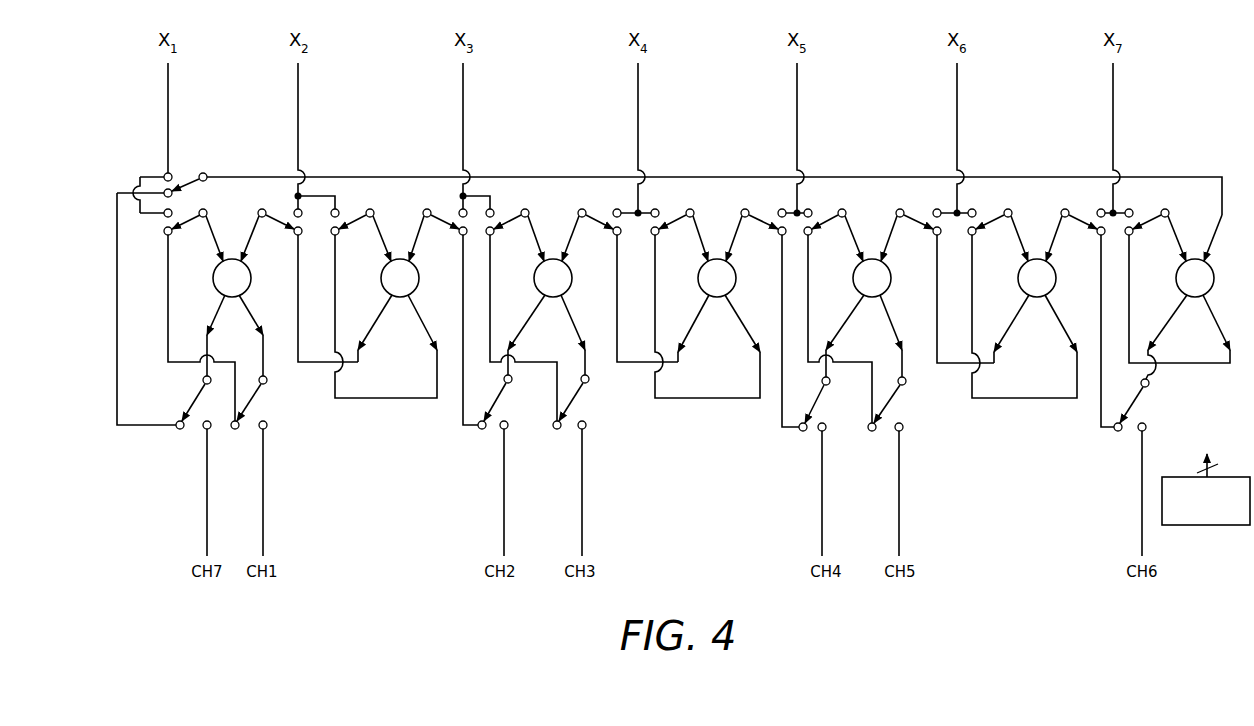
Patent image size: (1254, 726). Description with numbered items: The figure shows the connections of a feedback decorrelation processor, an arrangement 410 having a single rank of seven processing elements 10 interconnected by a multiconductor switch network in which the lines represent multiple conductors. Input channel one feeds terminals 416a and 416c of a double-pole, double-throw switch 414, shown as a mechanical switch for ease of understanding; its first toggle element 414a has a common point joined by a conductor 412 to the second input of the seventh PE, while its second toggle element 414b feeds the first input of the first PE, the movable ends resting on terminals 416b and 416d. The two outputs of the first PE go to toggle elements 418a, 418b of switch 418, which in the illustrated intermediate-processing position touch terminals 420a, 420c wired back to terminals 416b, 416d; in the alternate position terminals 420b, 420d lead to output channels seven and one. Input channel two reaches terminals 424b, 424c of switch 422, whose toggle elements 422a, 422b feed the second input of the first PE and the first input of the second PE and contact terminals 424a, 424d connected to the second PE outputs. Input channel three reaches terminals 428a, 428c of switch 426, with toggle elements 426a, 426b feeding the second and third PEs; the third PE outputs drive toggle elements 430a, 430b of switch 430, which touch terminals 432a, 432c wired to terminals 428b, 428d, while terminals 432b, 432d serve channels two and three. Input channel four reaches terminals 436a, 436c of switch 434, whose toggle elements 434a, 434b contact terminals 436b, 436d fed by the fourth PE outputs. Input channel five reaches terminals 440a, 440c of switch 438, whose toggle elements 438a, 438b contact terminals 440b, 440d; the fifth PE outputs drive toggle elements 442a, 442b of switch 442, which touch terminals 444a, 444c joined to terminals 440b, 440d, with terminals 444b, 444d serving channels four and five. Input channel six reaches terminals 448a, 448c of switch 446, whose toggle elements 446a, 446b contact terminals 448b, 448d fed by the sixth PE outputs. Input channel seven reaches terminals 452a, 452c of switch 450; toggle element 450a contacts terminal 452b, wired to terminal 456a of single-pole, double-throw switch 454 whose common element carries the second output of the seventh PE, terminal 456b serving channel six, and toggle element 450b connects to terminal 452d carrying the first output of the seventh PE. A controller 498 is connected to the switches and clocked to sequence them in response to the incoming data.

The processing element 10 is at (1176, 278).
The arrangement 410 is at (686, 532).
The conductor 412 is at (377, 175).
The double-pole, double-throw switch 414 is at (121, 162).
The first toggle element 414a is at (199, 174).
The second toggle element 414b is at (197, 218).
The terminal 416a is at (169, 172).
The terminal 416b is at (178, 193).
The terminal 416c is at (165, 217).
The terminal 416d is at (167, 236).
The double-pole, double-throw switch 418 is at (200, 413).
The toggle element 418a is at (198, 388).
The toggle element 418b is at (259, 392).
The terminal 420a is at (178, 431).
The terminal 420b is at (205, 432).
The terminal 420c is at (236, 432).
The terminal 420d is at (266, 432).
The double-pole, double-throw switch 422 is at (305, 230).
The toggle element 422a is at (268, 209).
The toggle element 422b is at (362, 212).
The terminal 424a is at (296, 236).
The terminal 424b is at (296, 208).
The terminal 424c is at (336, 208).
The terminal 424d is at (337, 236).
The double-pole, double-throw switch 426 is at (465, 230).
The toggle element 426a is at (424, 208).
The toggle element 426b is at (523, 208).
The terminal 428a is at (458, 209).
The terminal 428b is at (462, 236).
The terminal 428c is at (488, 208).
The terminal 428d is at (492, 236).
The double-pole, double-throw switch 430 is at (518, 413).
The toggle element 430a is at (500, 388).
The toggle element 430b is at (577, 389).
The terminal 432a is at (482, 431).
The terminal 432b is at (503, 431).
The terminal 432c is at (555, 431).
The terminal 432d is at (583, 431).
The double-pole, double-throw switch 434 is at (625, 230).
The toggle element 434a is at (583, 208).
The toggle element 434b is at (689, 208).
The terminal 436a is at (614, 208).
The terminal 436b is at (615, 236).
The terminal 436c is at (657, 208).
The terminal 436d is at (657, 236).
The double-pole, double-throw switch 438 is at (787, 230).
The toggle element 438a is at (748, 208).
The toggle element 438b is at (842, 208).
The terminal 440a is at (782, 208).
The terminal 440b is at (781, 236).
The terminal 440c is at (809, 208).
The terminal 440d is at (809, 236).
The double-pole, double-throw switch 442 is at (831, 413).
The toggle element 442a is at (815, 392).
The toggle element 442b is at (890, 393).
The terminal 444a is at (801, 433).
The terminal 444b is at (821, 433).
The terminal 444c is at (872, 433).
The terminal 444d is at (901, 433).
The double-pole, double-throw switch 446 is at (940, 230).
The toggle element 446a is at (900, 208).
The toggle element 446b is at (1008, 208).
The terminal 448a is at (937, 208).
The terminal 448b is at (936, 236).
The terminal 448c is at (973, 208).
The terminal 448d is at (973, 236).
The double-pole, double-throw switch 450 is at (1105, 230).
The toggle element 450a is at (1066, 208).
The toggle element 450b is at (1166, 208).
The terminal 452a is at (1101, 208).
The terminal 452b is at (1100, 236).
The terminal 452c is at (1130, 208).
The terminal 452d is at (1130, 236).
The single-pole, double-throw switch 454 is at (1146, 389).
The terminal 456a is at (1117, 432).
The terminal 456b is at (1146, 429).
The controller 498 is at (1242, 527).